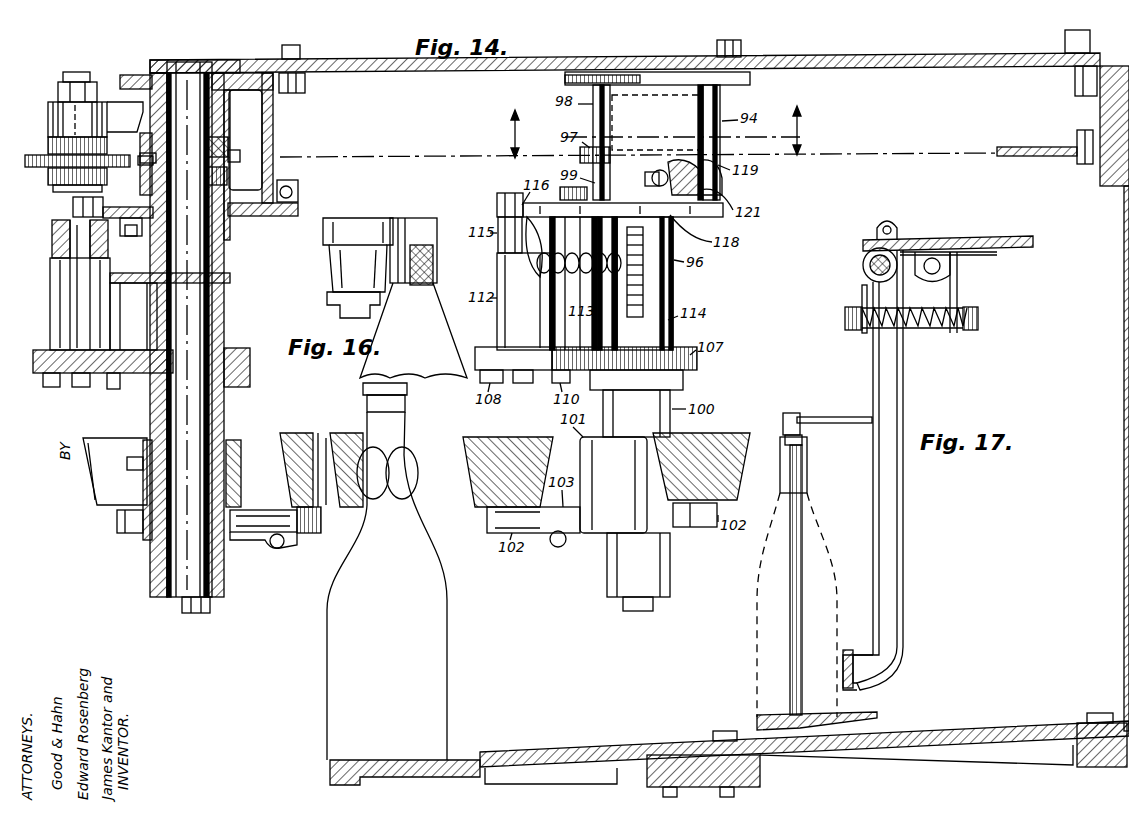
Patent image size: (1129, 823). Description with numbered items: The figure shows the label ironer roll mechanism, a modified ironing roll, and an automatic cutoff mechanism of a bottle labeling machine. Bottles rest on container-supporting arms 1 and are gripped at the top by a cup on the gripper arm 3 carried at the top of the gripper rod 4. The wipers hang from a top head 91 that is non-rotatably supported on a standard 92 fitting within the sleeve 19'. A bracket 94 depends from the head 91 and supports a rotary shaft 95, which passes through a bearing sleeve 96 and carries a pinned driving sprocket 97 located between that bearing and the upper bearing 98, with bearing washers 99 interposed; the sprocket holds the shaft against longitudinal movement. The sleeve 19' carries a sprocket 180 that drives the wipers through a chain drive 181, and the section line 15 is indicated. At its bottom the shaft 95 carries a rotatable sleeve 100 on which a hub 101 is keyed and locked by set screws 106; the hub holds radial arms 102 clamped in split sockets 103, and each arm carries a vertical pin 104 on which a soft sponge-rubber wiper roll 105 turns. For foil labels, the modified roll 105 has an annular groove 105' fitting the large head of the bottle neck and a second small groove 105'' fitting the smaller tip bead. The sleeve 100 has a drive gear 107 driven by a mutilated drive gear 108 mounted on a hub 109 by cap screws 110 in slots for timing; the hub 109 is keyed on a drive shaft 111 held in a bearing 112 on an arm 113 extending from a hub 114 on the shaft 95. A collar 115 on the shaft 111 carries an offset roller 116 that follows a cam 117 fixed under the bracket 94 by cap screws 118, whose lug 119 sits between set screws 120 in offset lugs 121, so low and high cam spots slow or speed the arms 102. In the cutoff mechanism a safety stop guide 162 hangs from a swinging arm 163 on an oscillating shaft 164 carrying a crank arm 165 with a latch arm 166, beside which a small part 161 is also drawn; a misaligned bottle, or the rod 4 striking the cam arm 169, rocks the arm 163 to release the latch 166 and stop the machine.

In FIG. 14, the container-supporting arm 1 is at (490, 752).
In FIG. 17, the gripper arm 3 is at (808, 486).
In FIG. 17, the gripper rod 4 is at (800, 562).
In FIG. 14, the section line 15 is at (640, 132).
In FIG. 14, the sleeve 19' is at (1106, 217).
In FIG. 14, the top head 91 is at (848, 56).
In FIG. 14, the standard 92 is at (1123, 346).
In FIG. 14, the bracket 94 is at (273, 129).
In FIG. 14, the rotary shaft 95 is at (186, 60).
In FIG. 14, the bearing sleeve 96 is at (232, 246).
In FIG. 14, the driving sprocket 97 is at (228, 140).
In FIG. 14, the upper bearing 98 is at (245, 140).
In FIG. 14, the bearing washers 99 is at (228, 176).
In FIG. 14, the rotatable sleeve 100 is at (224, 405).
In FIG. 14, the hub 101 is at (241, 448).
In FIG. 14, the radial arms 102 is at (250, 478).
In FIG. 14, the split sockets 103 is at (270, 510).
In FIG. 14, the vertical pin 104 is at (345, 436).
In FIG. 14, the wiper roll 105 is at (515, 459).
In FIG. 16, the wiper roll 105 is at (304, 272).
In FIG. 16, the annular groove 105' is at (413, 288).
In FIG. 16, the second small groove 105'' is at (358, 258).
In FIG. 14, the set screws 106 is at (146, 445).
In FIG. 14, the drive gear 107 is at (245, 348).
In FIG. 14, the mutilated drive gear 108 is at (47, 387).
In FIG. 14, the hub 109 is at (80, 387).
In FIG. 14, the cap screws 110 is at (114, 389).
In FIG. 14, the drive shaft 111 is at (70, 306).
In FIG. 14, the bearing 112 is at (52, 268).
In FIG. 14, the arm 113 is at (133, 316).
In FIG. 14, the hub 114 is at (232, 283).
In FIG. 14, the collar 115 is at (52, 226).
In FIG. 14, the offset roller 116 is at (73, 202).
In FIG. 14, the cam 117 is at (282, 216).
In FIG. 14, the cap screws 118 is at (127, 234).
In FIG. 14, the lug 119 is at (289, 187).
In FIG. 14, the set screws 120 is at (652, 178).
In FIG. 14, the offset lugs 121 is at (292, 203).
In FIG. 17, the roller 161 is at (951, 267).
In FIG. 17, the safety stop guide 162 is at (846, 650).
In FIG. 17, the swinging arm 163 is at (905, 373).
In FIG. 17, the oscillating shaft 164 is at (863, 264).
In FIG. 17, the crank arm 165 is at (889, 222).
In FIG. 17, the latch arm 166 is at (903, 240).
In FIG. 17, the cam arm 169 is at (835, 417).
In FIG. 14, the sprocket 180 is at (1058, 147).
In FIG. 14, the chain drive 181 is at (898, 153).